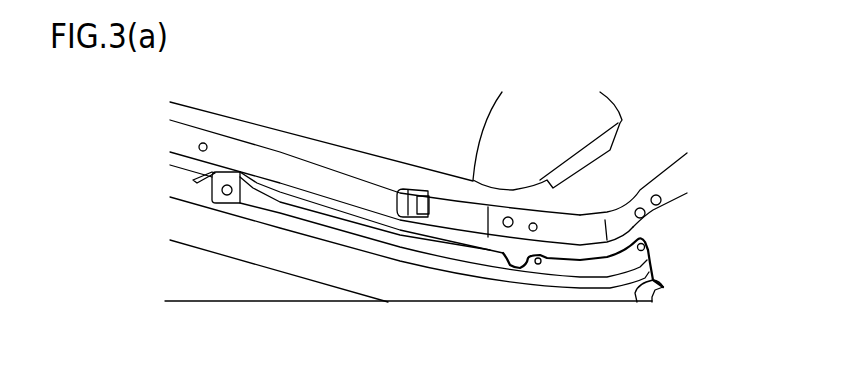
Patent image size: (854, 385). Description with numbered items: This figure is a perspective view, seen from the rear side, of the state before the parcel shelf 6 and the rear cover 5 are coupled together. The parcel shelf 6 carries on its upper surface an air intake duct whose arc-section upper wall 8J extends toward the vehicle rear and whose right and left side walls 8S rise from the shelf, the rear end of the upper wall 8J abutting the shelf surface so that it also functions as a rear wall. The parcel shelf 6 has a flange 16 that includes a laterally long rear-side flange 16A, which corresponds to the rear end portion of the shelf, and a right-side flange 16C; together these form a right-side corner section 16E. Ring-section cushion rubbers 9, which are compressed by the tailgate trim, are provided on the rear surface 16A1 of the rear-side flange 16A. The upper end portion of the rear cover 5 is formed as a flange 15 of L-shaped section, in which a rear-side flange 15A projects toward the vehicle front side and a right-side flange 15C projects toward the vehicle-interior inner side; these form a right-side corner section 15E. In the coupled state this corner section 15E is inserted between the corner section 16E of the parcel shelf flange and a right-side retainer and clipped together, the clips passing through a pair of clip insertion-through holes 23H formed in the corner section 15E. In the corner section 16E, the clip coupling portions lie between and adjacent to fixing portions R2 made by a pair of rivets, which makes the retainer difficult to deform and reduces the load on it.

The rear cover 5 is at (235, 275).
The parcel shelf 6 is at (663, 130).
The upper wall 8J is at (328, 62).
The side walls 8S is at (513, 110).
The cushion rubbers 9 is at (410, 190).
The flange 15 is at (362, 233).
The rear-side flange 15A is at (302, 212).
The right-side flange 15C is at (620, 267).
The right-side corner section 15E is at (597, 282).
The flange 16 is at (452, 203).
The rear-side flange 16A is at (288, 165).
The rear surface 16A1 is at (327, 178).
The right-side flange 16C is at (670, 185).
The right-side corner section 16E is at (618, 187).
The clip insertion-through holes 23H is at (531, 231).
The fixing portions R2 is at (504, 226).